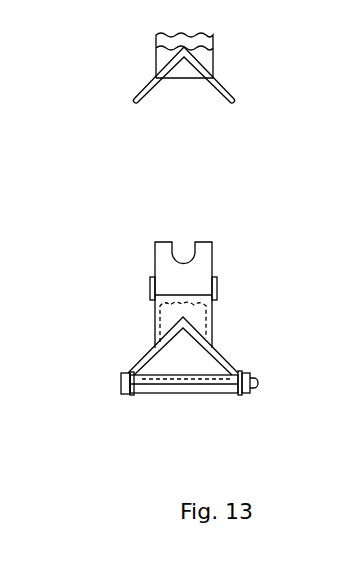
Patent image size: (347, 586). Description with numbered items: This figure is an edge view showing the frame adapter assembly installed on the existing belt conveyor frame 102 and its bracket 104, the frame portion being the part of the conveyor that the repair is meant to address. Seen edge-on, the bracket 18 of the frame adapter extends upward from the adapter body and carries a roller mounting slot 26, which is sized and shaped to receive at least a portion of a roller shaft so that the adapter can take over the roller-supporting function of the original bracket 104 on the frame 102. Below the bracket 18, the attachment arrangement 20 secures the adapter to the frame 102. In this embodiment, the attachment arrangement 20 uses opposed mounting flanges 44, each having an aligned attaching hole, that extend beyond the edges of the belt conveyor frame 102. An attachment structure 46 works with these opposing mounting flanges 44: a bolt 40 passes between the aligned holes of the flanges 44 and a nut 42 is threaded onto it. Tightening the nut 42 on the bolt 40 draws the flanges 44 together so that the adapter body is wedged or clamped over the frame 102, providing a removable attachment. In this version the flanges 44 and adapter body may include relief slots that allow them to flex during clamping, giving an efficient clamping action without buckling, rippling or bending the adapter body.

The bracket 18 is at (237, 257).
The attachment arrangement 20 is at (108, 366).
The roller mounting slot 26 is at (184, 248).
The bolt 40 is at (118, 392).
The nut 42 is at (243, 372).
The mounting flange 44 is at (132, 394).
The attachment structure 46 is at (280, 383).
The belt conveyor frame 102 is at (140, 352).
The bracket 104 is at (212, 318).